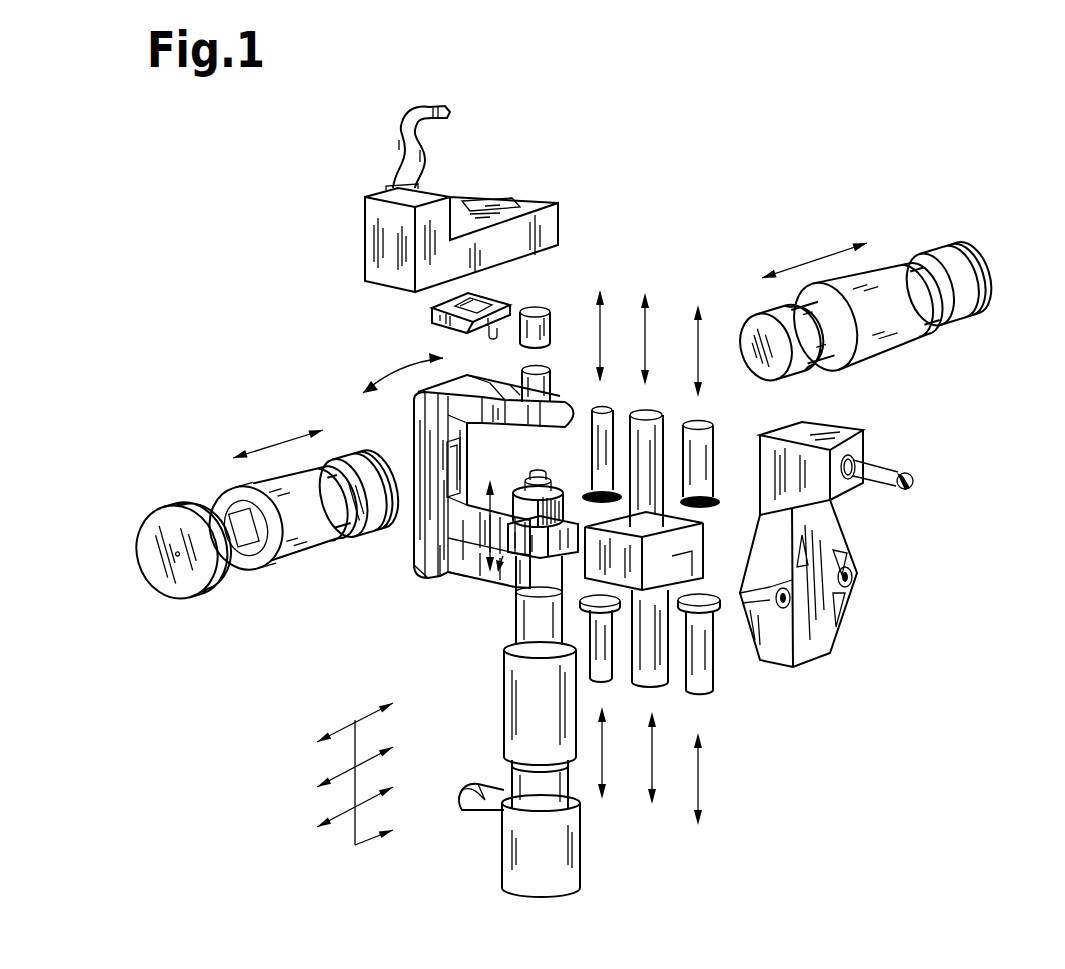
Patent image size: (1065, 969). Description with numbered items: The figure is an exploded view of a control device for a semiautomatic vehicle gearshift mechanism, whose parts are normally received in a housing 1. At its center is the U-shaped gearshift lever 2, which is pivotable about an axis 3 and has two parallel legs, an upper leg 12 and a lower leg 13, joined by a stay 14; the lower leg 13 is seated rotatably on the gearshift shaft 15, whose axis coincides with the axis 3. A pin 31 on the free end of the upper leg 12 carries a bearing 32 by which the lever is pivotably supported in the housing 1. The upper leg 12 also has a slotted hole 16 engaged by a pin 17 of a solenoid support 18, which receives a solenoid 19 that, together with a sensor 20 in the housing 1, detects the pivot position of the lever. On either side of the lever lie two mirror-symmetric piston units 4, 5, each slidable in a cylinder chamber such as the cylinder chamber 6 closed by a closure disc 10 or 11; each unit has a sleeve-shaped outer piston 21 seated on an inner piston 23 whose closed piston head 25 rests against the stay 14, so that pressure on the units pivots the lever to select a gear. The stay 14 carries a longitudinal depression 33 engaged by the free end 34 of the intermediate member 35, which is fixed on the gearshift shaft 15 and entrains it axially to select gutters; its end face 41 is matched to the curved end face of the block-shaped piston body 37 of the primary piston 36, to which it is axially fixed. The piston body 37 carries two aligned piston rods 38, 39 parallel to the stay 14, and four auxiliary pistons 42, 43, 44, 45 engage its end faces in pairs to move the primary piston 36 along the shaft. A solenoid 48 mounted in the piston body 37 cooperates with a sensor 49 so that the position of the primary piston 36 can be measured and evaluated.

The housing 1 is at (387, 804).
The gearshift lever 2 is at (403, 593).
The axis 3 is at (367, 750).
The piston unit 4 is at (127, 537).
The piston unit 5 is at (892, 228).
The cylinder chamber 6 is at (334, 736).
The closure disc 10 is at (153, 555).
The closure disc 11 is at (950, 267).
The upper leg 12 is at (500, 392).
The lower leg 13 is at (472, 573).
The stay 14 is at (413, 550).
The gearshift shaft 15 is at (567, 868).
The slotted hole 16 is at (443, 503).
The pin 17 is at (492, 331).
The solenoid support 18 is at (433, 315).
The solenoid 19 is at (497, 303).
The sensor 20 is at (493, 217).
The outer piston 21 is at (917, 320).
The inner piston 23 is at (867, 355).
The piston head 25 is at (778, 312).
The pin 31 is at (547, 368).
The bearing 32 is at (553, 310).
The depression 33 is at (453, 455).
The free end 34 is at (448, 535).
The intermediate member 35 is at (502, 562).
The primary piston 36 is at (788, 603).
The piston body 37 is at (750, 567).
The piston rod 38 is at (653, 428).
The piston rod 39 is at (653, 647).
The end face 41 is at (512, 655).
The auxiliary piston 42 is at (607, 457).
The auxiliary piston 43 is at (713, 468).
The auxiliary piston 44 is at (602, 667).
The auxiliary piston 45 is at (703, 637).
The solenoid 48 is at (690, 542).
The sensor 49 is at (874, 544).